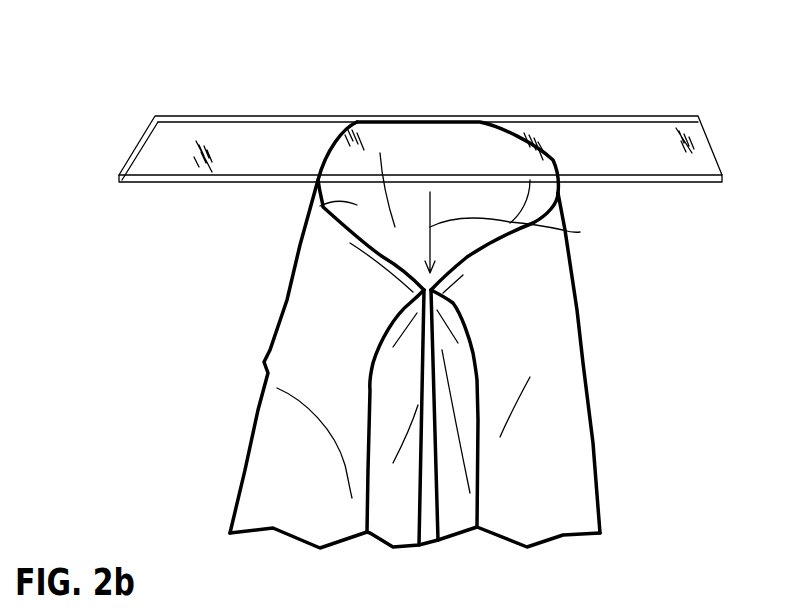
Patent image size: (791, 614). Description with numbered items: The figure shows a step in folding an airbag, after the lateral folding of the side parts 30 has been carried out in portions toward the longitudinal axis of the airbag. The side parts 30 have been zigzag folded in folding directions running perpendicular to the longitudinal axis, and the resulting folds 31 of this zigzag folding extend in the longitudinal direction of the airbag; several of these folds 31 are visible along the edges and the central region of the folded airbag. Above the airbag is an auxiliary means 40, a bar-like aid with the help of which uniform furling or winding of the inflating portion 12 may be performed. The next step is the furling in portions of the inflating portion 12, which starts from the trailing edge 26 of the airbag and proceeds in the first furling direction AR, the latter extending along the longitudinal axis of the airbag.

The inflating portion 12 is at (318, 202).
The trailing edge 26 is at (403, 118).
The side part 30 is at (262, 455).
The folds 31 is at (470, 330).
The auxiliary means 40 is at (630, 137).
The first furling direction AR is at (580, 232).